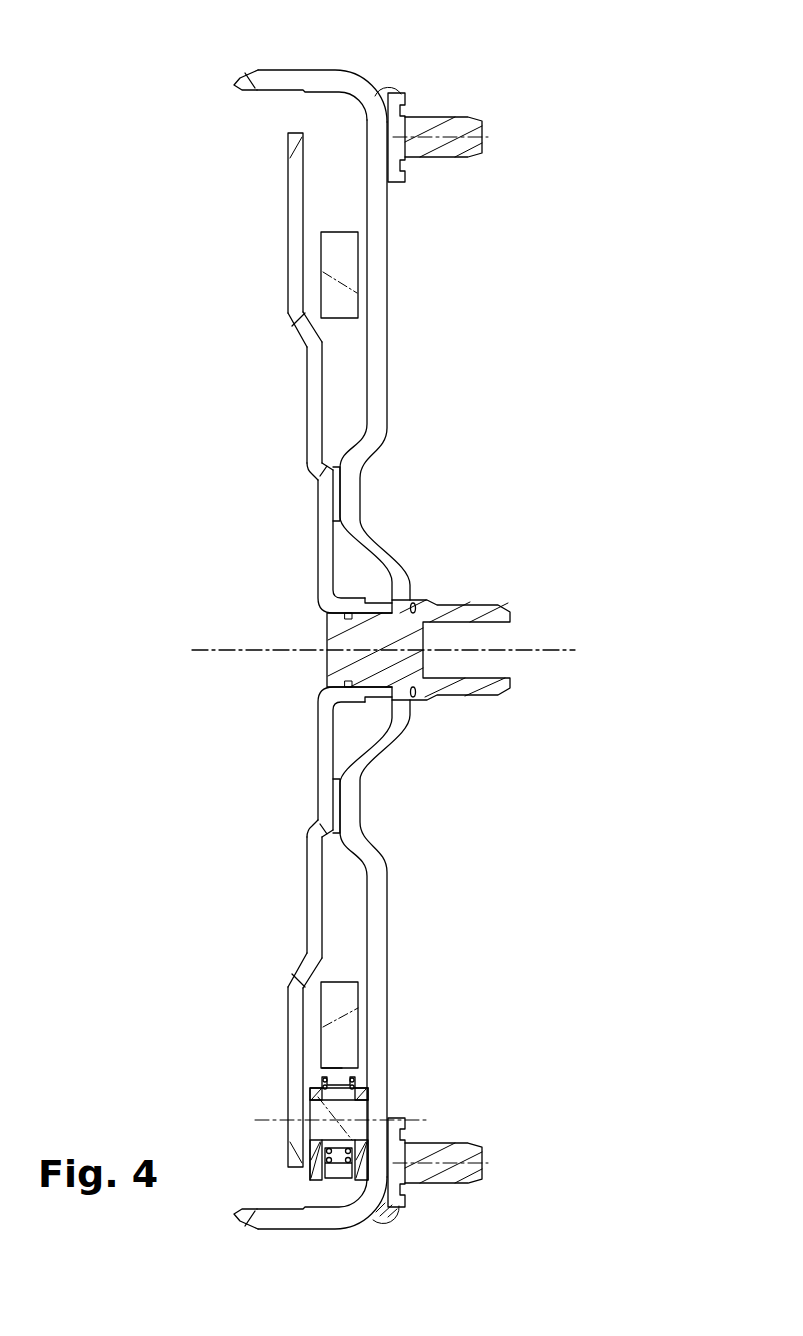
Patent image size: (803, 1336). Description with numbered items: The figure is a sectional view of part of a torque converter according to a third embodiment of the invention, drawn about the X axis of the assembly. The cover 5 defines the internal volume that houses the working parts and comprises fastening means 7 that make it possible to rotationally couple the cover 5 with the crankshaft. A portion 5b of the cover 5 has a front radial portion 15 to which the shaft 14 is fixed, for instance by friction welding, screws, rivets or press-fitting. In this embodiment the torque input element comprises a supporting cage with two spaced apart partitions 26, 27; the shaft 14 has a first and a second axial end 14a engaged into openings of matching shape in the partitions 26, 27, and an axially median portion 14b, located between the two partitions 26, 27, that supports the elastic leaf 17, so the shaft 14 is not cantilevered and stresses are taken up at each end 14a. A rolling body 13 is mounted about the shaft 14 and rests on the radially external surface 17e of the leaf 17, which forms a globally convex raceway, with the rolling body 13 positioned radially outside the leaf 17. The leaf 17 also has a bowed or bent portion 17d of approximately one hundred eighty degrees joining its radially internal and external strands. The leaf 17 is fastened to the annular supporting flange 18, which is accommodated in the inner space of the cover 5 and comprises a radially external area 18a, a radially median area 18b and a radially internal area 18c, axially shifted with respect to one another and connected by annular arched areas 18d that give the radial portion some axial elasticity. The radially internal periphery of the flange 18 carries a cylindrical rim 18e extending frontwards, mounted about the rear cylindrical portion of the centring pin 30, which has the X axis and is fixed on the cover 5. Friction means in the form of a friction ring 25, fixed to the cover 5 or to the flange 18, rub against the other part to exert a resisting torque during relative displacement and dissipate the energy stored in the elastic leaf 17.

The cover 5 is at (310, 68).
The portion of the cover 5b is at (320, 74).
The fastening means 7 is at (440, 165).
The rolling body 13 is at (340, 1165).
The shaft 14 is at (301, 1128).
The axial end of the shaft 14a is at (365, 1135).
The axially median portion of the shaft 14b is at (325, 1105).
The front radial portion 15 is at (385, 335).
The elastic leaf 17 is at (340, 258).
The bowed or bent portion 17d is at (340, 998).
The radially external surface (raceway) 17e is at (345, 1067).
The annular supporting flange 18 is at (286, 650).
The radially external area 18a is at (292, 207).
The radially median area 18b is at (312, 405).
The radially internal area 18c is at (325, 552).
The annular arched area 18d is at (303, 333).
The cylindrical rim 18e is at (362, 600).
The friction ring (friction means) 25 is at (345, 800).
The partition 26 is at (344, 1195).
The partition 27 is at (313, 1178).
The centring pin 30 is at (350, 665).
The axis X is at (215, 648).